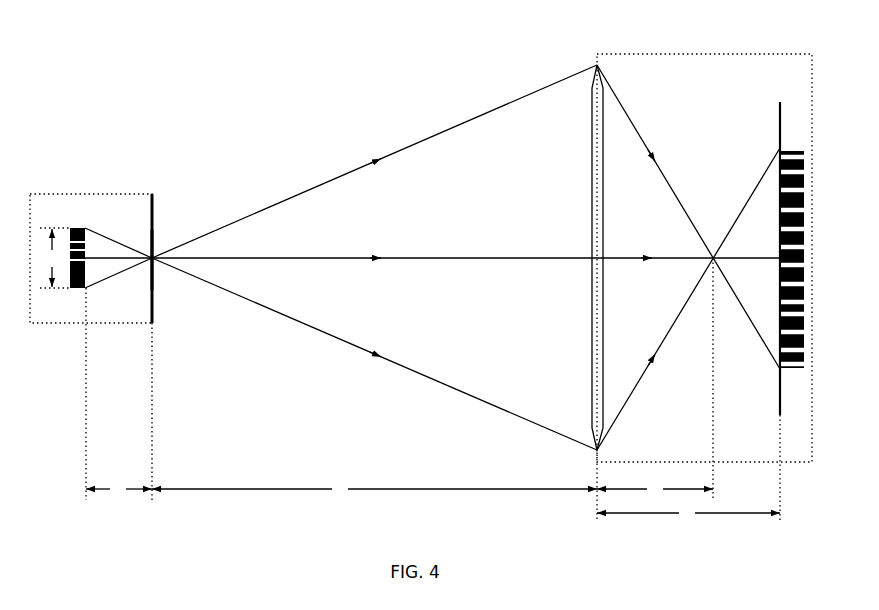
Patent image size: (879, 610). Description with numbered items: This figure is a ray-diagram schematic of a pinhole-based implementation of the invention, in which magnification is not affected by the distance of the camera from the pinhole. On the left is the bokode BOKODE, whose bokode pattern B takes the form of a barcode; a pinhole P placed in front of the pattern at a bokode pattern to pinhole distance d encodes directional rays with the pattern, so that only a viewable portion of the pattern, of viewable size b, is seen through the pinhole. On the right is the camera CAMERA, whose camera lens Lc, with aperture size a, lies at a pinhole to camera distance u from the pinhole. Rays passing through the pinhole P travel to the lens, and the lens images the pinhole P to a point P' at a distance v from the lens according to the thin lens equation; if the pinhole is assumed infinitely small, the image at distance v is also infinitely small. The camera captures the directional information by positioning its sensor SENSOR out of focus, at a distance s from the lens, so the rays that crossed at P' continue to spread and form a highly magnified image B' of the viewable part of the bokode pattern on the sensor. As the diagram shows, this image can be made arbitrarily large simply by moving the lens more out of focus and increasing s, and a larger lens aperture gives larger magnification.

The bokode BOKODE is at (91, 248).
The bokode pattern B is at (77, 248).
The bokode pattern viewable size b is at (55, 258).
The pinhole P is at (159, 260).
The aperture size a is at (432, 248).
The camera CAMERA is at (704, 248).
The camera lens Lc is at (607, 257).
The image of pinhole P' is at (712, 364).
The sensor SENSOR is at (768, 249).
The bokode pattern image B' is at (792, 248).
The bokode pattern to pinhole distance d is at (119, 489).
The pinhole to camera distance u is at (374, 489).
The lens to pinhole image distance v is at (655, 489).
The sensor-lens distance s is at (688, 513).